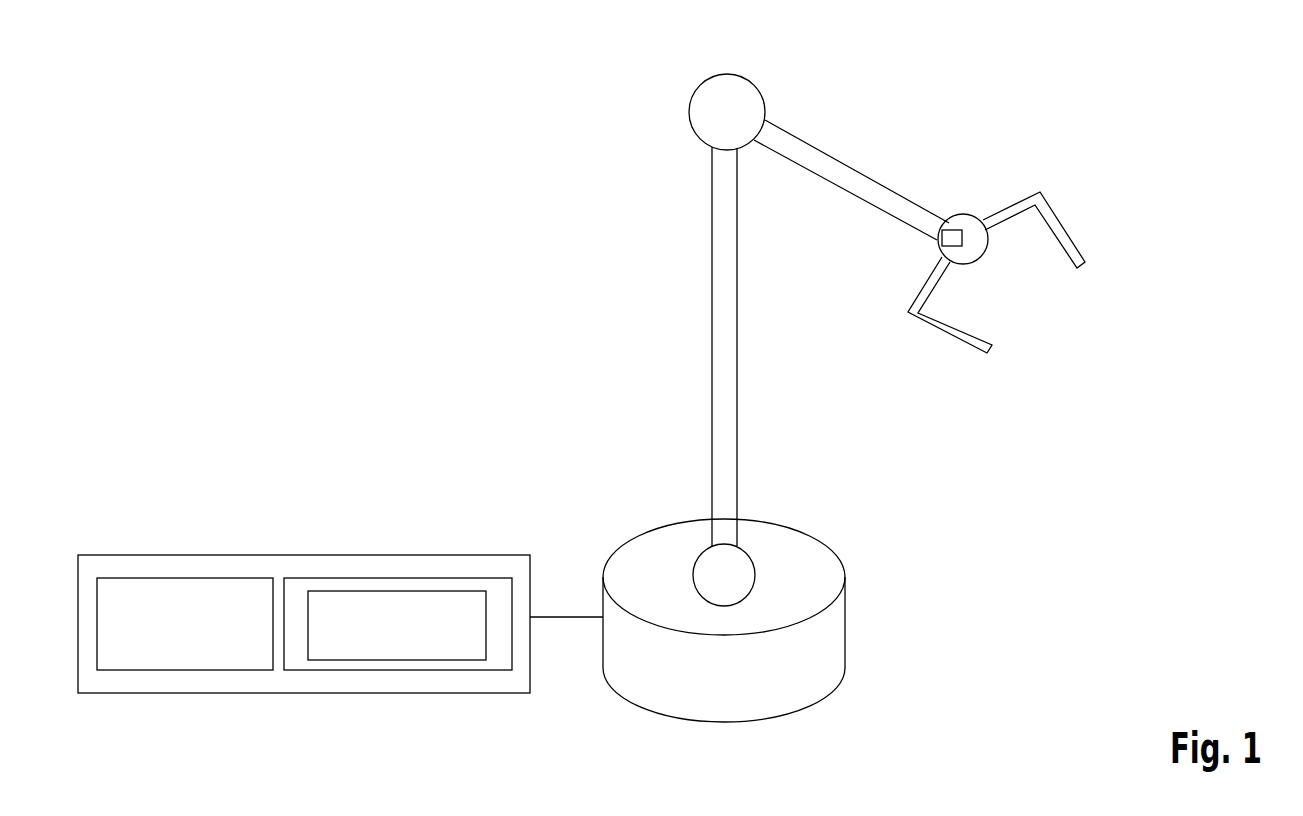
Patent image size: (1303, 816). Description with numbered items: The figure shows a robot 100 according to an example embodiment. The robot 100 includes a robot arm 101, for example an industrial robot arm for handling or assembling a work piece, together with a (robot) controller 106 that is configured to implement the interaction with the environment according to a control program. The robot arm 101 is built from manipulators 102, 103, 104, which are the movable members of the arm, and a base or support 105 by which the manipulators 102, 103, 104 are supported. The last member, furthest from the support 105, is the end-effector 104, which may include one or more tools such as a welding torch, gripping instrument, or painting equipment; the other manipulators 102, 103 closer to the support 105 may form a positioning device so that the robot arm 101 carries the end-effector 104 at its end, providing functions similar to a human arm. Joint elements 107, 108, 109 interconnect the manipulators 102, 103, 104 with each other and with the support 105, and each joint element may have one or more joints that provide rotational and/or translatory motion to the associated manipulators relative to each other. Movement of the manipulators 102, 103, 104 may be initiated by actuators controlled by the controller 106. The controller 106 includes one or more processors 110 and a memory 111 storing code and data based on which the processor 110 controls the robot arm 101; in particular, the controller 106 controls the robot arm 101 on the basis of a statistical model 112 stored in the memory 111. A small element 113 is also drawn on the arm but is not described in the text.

The robot 100 is at (996, 116).
The robot arm 101 is at (664, 199).
The manipulator 102 is at (725, 312).
The manipulator 103 is at (890, 192).
The end-effector 104 is at (1060, 228).
The base 105 is at (827, 635).
The controller 106 is at (300, 555).
The joint element 107 is at (738, 565).
The joint element 108 is at (700, 112).
The joint element 109 is at (975, 245).
The processor 110 is at (162, 638).
The memory 111 is at (396, 671).
The statistical model 112 is at (420, 640).
The sensor 113 is at (938, 242).